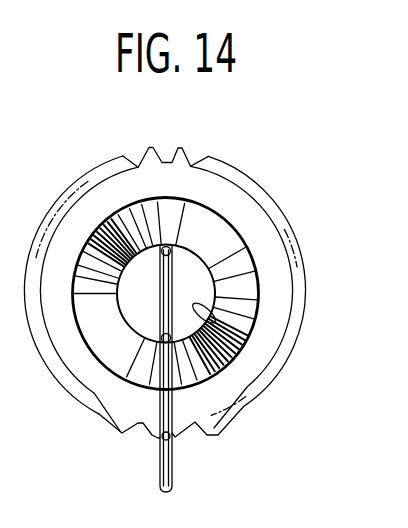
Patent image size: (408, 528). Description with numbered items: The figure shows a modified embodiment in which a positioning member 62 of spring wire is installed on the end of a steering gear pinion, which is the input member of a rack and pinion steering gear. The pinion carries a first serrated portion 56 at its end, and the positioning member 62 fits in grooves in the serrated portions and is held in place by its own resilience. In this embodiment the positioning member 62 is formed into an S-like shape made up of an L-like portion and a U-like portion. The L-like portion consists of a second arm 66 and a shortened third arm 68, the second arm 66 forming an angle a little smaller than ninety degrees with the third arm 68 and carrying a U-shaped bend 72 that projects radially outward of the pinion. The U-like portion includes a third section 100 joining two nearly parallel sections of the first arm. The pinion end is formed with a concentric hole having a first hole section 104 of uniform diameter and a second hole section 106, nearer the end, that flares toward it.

The first serrated portion 56 is at (173, 156).
The third section 100 is at (172, 283).
The first hole section 104 is at (197, 310).
The second hole section 106 is at (240, 278).
The second arm 66 is at (162, 434).
The U-shaped bend 72 is at (170, 463).
The third arm 68 is at (130, 386).
The positioning member 62 is at (177, 399).